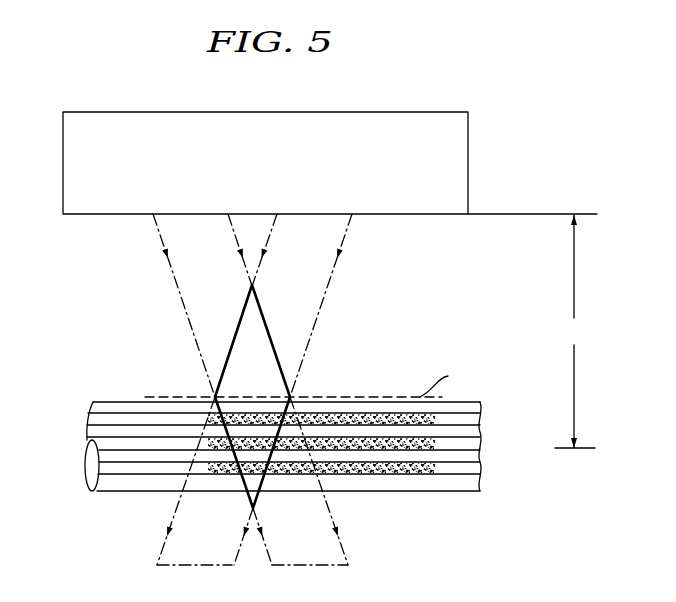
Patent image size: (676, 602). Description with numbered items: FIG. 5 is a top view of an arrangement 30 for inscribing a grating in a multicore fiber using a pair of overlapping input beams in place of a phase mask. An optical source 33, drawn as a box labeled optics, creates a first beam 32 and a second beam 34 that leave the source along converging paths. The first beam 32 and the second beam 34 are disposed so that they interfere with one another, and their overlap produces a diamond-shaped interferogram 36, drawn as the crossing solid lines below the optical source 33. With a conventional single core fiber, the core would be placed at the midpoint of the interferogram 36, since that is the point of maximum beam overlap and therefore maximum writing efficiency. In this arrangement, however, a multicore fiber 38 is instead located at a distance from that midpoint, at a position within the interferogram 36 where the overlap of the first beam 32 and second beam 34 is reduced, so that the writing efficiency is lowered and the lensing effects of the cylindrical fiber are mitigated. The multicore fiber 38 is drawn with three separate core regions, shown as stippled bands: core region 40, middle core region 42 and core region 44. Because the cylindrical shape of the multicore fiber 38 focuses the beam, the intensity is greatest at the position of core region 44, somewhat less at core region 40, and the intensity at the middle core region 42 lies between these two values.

The arrangement 30 is at (575, 115).
The first beam 32 is at (190, 287).
The optical source 33 is at (408, 112).
The second beam 34 is at (306, 288).
The diamond-shaped interferogram 36 is at (266, 368).
The multicore fiber 38 is at (83, 441).
The core region 40 is at (477, 418).
The middle core region 42 is at (471, 445).
The core region 44 is at (464, 468).